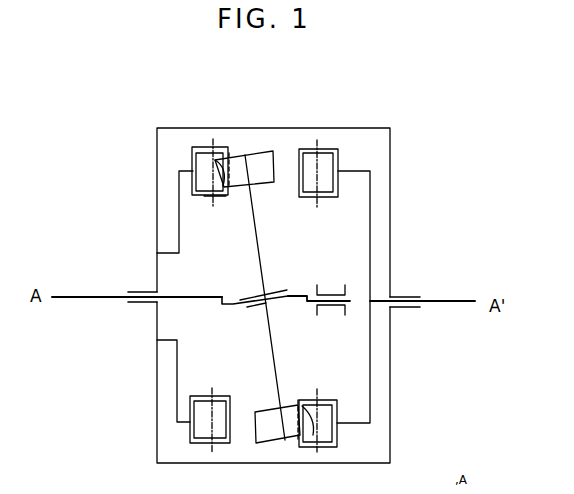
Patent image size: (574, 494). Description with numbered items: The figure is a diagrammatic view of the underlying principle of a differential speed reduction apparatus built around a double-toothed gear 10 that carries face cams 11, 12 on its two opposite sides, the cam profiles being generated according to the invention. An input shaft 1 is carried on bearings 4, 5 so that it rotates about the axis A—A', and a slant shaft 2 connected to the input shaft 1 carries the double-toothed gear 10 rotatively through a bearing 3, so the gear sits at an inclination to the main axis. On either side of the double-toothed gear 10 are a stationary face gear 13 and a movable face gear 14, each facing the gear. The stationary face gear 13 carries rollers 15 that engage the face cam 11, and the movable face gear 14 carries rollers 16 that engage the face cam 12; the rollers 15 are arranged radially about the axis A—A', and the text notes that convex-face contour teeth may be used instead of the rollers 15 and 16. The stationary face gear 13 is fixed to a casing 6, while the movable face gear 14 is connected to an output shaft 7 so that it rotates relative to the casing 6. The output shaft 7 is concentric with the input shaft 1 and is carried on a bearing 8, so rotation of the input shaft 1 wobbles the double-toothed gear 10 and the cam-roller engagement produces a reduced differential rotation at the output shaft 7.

The input shaft 1 is at (92, 299).
The slant shaft 2 is at (293, 299).
The bearing 3 is at (248, 309).
The bearing 4 is at (147, 304).
The bearing 5 is at (337, 306).
The casing 6 is at (157, 222).
The output shaft 7 is at (453, 303).
The bearing 8 is at (408, 308).
The double-toothed gear 10 is at (258, 240).
The face cam 11 is at (218, 146).
The face cam 12 is at (273, 162).
The stationary face gear 13 is at (179, 197).
The movable face gear 14 is at (371, 212).
The rollers 15 is at (203, 148).
The rollers 16 is at (325, 149).